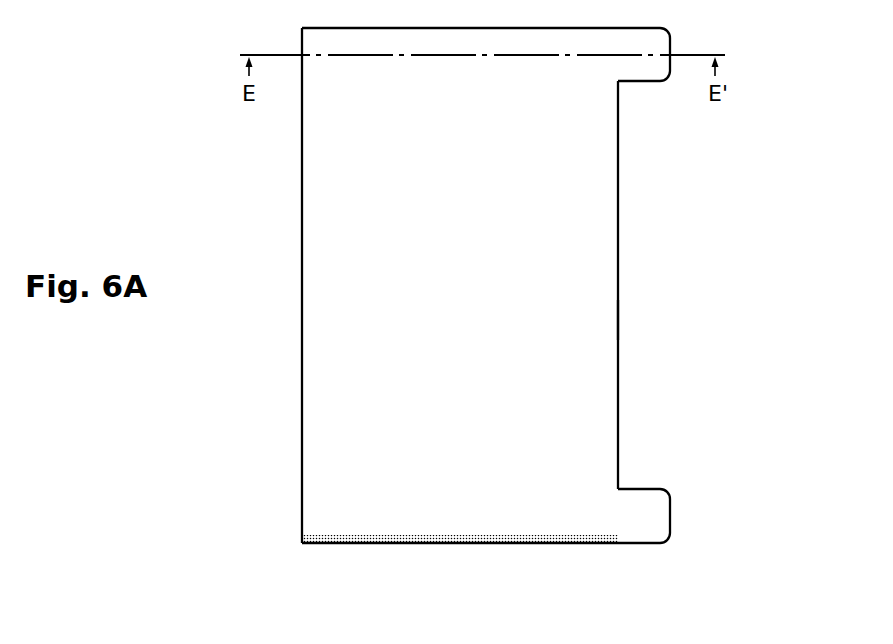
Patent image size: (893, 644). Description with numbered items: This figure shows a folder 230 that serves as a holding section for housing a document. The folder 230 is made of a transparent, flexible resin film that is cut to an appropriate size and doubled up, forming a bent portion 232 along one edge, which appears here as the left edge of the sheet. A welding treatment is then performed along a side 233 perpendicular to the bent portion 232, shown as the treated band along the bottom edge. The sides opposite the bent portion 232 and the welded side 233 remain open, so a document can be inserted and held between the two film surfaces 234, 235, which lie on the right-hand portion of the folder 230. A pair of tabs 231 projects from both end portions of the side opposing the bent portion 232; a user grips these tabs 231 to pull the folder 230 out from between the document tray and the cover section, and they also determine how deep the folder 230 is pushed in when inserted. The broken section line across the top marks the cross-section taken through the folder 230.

The folder 230 is at (300, 234).
The tabs 231 is at (660, 44).
The bent portion 232 is at (300, 325).
The side 233 is at (455, 540).
The surface 234 is at (609, 234).
The surface 235 is at (609, 320).